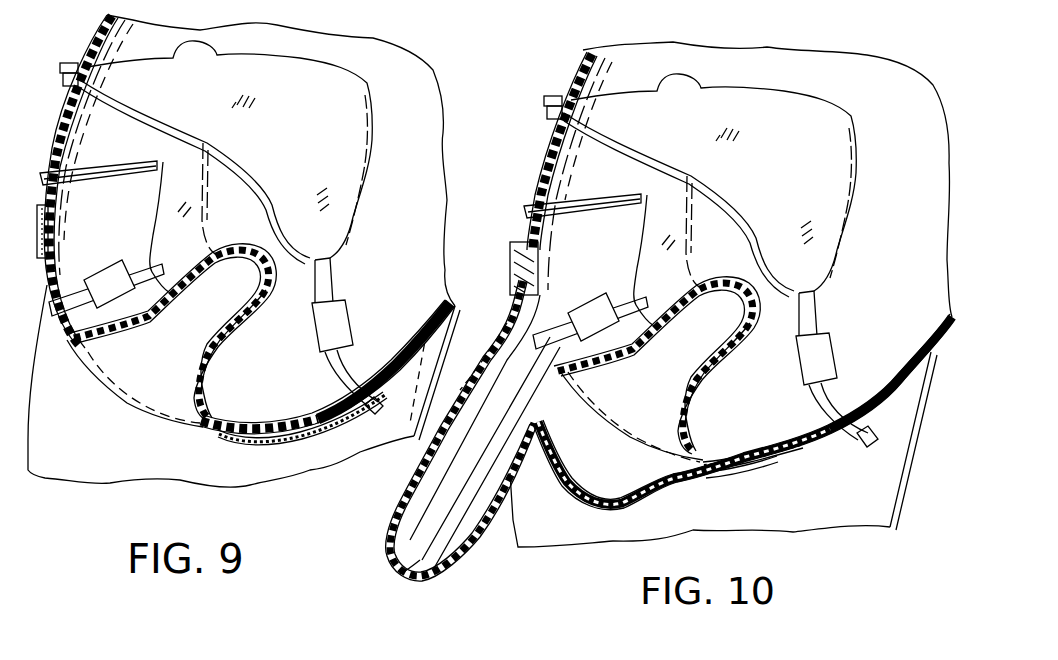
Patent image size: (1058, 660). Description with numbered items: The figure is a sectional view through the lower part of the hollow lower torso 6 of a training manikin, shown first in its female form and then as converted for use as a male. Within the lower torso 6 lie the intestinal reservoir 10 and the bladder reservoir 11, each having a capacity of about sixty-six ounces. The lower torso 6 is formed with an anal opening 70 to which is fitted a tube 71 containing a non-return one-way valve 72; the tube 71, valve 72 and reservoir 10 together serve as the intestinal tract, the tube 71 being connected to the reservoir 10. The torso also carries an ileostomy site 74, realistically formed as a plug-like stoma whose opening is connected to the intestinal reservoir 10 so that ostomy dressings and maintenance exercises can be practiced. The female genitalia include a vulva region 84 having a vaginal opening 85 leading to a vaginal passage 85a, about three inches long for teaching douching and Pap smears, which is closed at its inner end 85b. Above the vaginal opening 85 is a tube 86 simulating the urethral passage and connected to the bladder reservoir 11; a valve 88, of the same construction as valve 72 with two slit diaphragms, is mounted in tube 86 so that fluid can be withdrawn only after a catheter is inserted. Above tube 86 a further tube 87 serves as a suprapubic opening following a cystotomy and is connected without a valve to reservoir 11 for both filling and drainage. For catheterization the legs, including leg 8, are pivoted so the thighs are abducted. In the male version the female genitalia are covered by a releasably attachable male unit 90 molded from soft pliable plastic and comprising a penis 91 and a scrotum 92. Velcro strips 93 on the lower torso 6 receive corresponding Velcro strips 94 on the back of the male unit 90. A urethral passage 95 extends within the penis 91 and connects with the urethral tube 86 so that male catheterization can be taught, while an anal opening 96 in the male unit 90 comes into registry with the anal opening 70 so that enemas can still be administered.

In FIG. 9, the lower torso 6 is at (264, 448).
In FIG. 10, the lower torso 6 is at (809, 474).
In FIG. 9, the leg 8 is at (72, 460).
In FIG. 10, the leg 8 is at (570, 525).
In FIG. 9, the intestinal reservoir 10 is at (340, 155).
In FIG. 10, the intestinal reservoir 10 is at (734, 183).
In FIG. 9, the bladder reservoir 11 is at (163, 196).
In FIG. 10, the bladder reservoir 11 is at (631, 260).
In FIG. 9, the anal opening 70 is at (370, 409).
In FIG. 9, the tube 71 is at (328, 284).
In FIG. 10, the tube 71 is at (841, 359).
In FIG. 9, the non-return one-way valve 72 is at (340, 325).
In FIG. 10, the non-return one-way valve 72 is at (837, 351).
In FIG. 9, the ileostomy site 74 is at (70, 62).
In FIG. 10, the ileostomy site 74 is at (541, 85).
In FIG. 9, the vulva region 84 is at (140, 412).
In FIG. 10, the vulva region 84 is at (630, 415).
In FIG. 9, the vaginal opening 85 is at (167, 367).
In FIG. 10, the vaginal opening 85 is at (657, 365).
In FIG. 9, the vaginal passage 85a is at (226, 338).
In FIG. 10, the vaginal passage 85a is at (724, 374).
In FIG. 9, the inner end 85b is at (258, 244).
In FIG. 10, the inner end 85b is at (679, 205).
In FIG. 9, the urethral tube 86 is at (56, 322).
In FIG. 10, the urethral tube 86 is at (590, 310).
In FIG. 9, the suprapubic opening tube 87 is at (44, 170).
In FIG. 10, the suprapubic opening tube 87 is at (567, 183).
In FIG. 9, the valve 88 is at (106, 280).
In FIG. 10, the valve 88 is at (593, 299).
In FIG. 10, the male unit 90 is at (396, 479).
In FIG. 10, the penis 91 is at (466, 521).
In FIG. 10, the scrotum 92 is at (646, 490).
In FIG. 9, the Velcro strips 93 is at (38, 226).
In FIG. 10, the Velcro strips 93 is at (520, 236).
In FIG. 10, the Velcro strips 94 is at (509, 263).
In FIG. 10, the urethral passage 95 is at (505, 396).
In FIG. 10, the anal opening 96 is at (858, 449).